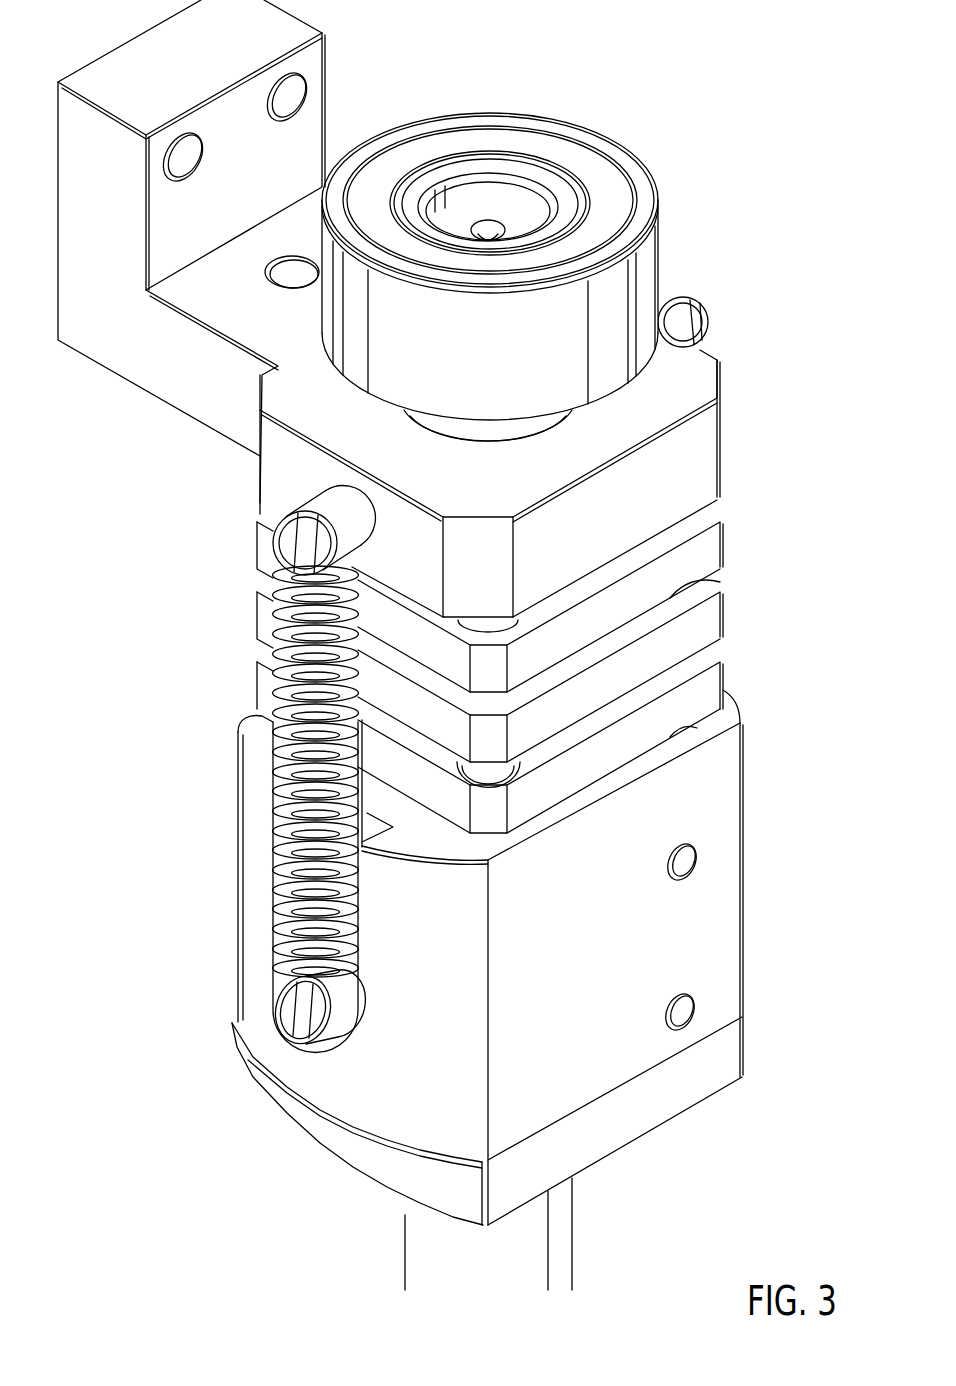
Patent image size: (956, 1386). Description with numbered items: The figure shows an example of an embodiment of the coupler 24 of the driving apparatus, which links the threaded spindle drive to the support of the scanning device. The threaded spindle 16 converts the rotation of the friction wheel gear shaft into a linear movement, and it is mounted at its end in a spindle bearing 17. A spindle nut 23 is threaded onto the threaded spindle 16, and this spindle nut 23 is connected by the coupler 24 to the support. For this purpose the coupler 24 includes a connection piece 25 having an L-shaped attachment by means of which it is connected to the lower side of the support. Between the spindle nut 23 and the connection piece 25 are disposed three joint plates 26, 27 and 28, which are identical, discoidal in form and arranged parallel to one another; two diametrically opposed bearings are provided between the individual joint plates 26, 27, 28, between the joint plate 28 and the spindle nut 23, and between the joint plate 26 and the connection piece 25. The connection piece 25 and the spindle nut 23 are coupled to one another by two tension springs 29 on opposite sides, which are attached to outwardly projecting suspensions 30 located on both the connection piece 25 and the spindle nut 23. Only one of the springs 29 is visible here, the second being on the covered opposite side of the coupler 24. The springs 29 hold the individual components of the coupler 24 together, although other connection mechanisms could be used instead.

The threaded spindle 16 is at (560, 1263).
The spindle bearing 17 is at (570, 158).
The spindle nut 23 is at (673, 1107).
The coupler 24 is at (148, 818).
The connection piece 25 is at (141, 378).
The joint plate 26 is at (727, 550).
The joint plate 27 is at (727, 620).
The joint plate 28 is at (727, 690).
The tension spring 29 is at (272, 606).
The suspension 30 is at (705, 333).